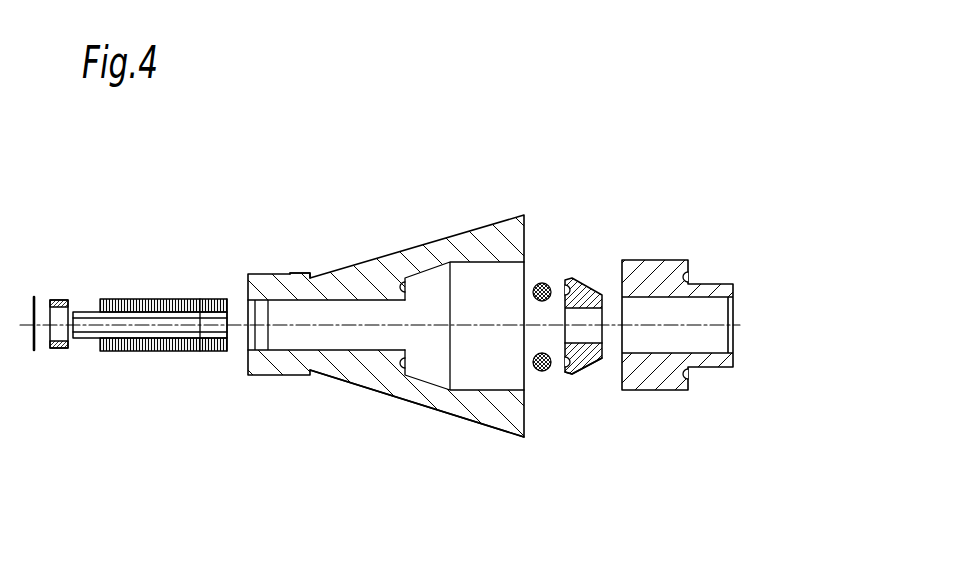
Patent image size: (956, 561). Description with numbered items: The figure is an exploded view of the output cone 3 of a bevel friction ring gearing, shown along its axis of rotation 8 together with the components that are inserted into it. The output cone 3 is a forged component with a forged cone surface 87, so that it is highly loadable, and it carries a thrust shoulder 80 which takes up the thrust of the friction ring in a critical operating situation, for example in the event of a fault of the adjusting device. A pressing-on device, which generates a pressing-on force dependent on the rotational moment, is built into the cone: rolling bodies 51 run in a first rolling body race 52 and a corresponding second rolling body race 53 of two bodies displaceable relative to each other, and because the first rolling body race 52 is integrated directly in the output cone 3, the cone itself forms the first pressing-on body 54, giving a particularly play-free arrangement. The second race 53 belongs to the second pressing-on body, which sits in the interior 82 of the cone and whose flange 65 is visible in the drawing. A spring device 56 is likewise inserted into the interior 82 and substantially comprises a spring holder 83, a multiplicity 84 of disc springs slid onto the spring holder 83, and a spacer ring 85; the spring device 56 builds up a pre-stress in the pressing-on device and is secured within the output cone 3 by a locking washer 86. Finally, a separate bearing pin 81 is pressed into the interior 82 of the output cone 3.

The output cone 3 is at (372, 263).
The axis of rotation 8 is at (330, 330).
The rolling bodies 51 is at (542, 262).
The first rolling body race 52 is at (407, 366).
The second rolling body race 53 is at (567, 290).
The first pressing-on body 54 is at (460, 452).
The spring device 56 is at (184, 254).
The ring flange 65 is at (585, 353).
The thrust shoulder 80 is at (298, 273).
The bearing pin 81 is at (650, 273).
The interior 82 is at (460, 290).
The spring holder 83 is at (227, 353).
The multiplicity of disc springs 84 is at (133, 299).
The spacer ring 85 is at (63, 350).
The locking washer 86 is at (33, 300).
The forged cone surface 87 is at (371, 391).